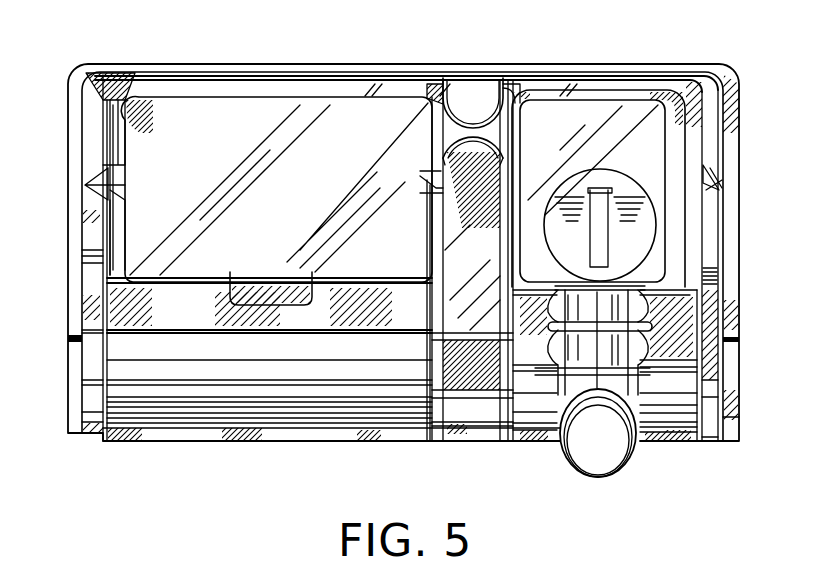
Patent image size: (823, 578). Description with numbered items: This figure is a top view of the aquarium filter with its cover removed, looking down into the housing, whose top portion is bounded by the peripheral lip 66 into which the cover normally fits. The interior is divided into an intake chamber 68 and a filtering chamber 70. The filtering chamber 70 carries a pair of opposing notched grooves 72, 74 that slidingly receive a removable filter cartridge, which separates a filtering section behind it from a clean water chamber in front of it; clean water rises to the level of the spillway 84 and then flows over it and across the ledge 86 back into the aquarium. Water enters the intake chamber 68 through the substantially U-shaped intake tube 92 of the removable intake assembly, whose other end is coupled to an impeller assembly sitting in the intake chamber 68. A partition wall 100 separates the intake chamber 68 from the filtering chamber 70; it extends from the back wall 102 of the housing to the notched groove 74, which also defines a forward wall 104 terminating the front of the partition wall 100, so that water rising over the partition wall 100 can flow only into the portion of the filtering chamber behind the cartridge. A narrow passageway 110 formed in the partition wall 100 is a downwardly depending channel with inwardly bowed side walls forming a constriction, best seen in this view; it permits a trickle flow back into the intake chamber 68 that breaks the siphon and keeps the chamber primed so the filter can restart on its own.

The peripheral lip 66 is at (727, 73).
The intake chamber 68 is at (590, 133).
The filtering chamber 70 is at (258, 133).
The notched groove 72 is at (92, 185).
The notched groove 74 is at (640, 230).
The spillway 84 is at (290, 378).
The ledge 86 is at (160, 437).
The intake tube 92 is at (610, 453).
The partition wall 100 is at (463, 106).
The back wall 102 is at (528, 62).
The forward wall 104 is at (438, 130).
The passageway 110 is at (466, 135).